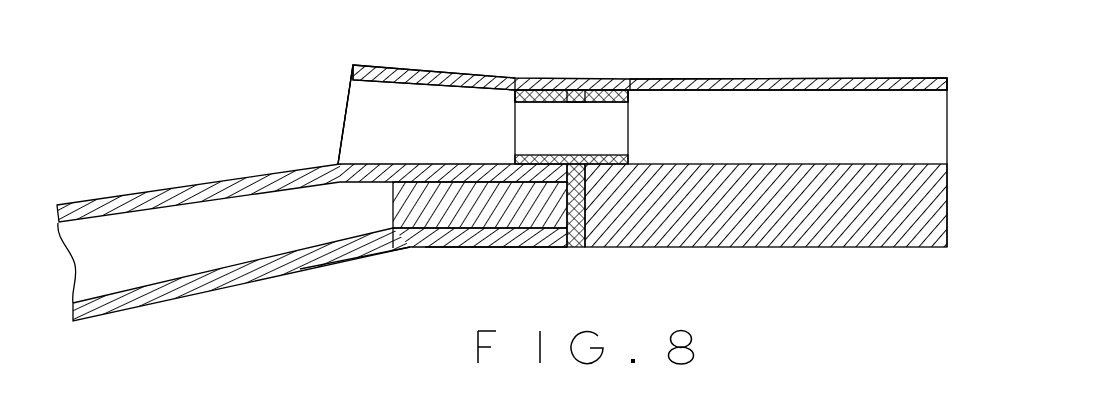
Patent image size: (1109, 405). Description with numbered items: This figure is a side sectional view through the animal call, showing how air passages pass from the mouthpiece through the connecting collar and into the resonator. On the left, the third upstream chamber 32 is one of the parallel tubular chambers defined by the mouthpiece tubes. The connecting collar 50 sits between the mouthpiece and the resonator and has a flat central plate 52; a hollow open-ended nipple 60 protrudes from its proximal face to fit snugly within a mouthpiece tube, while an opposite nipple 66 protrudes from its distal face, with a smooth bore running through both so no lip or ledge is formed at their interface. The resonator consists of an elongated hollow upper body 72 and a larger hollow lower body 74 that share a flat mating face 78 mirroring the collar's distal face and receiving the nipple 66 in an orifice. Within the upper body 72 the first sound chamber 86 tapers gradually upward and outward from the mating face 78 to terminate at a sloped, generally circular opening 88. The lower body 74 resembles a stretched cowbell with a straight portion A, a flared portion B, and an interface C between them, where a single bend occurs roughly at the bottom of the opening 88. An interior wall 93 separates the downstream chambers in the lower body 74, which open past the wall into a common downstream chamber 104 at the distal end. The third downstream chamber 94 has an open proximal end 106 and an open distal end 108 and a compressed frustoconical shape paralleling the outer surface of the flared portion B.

The third upstream chamber 32 is at (802, 127).
The connecting collar 50 is at (597, 80).
The plate 52 is at (578, 249).
The nipple 60 is at (660, 78).
The nipple 66 is at (540, 88).
The upper body 72 is at (447, 72).
The lower body 74 is at (247, 180).
The mating face 78 is at (577, 84).
The first sound chamber 86 is at (430, 103).
The opening 88 is at (330, 113).
The interior wall 93 is at (425, 220).
The third downstream chamber 94 is at (383, 115).
The common downstream chamber 104 is at (183, 247).
The open proximal end 106 is at (503, 128).
The open distal end 108 is at (280, 98).
The straight portion A is at (474, 252).
The flared portion B is at (340, 265).
The interface C is at (400, 255).